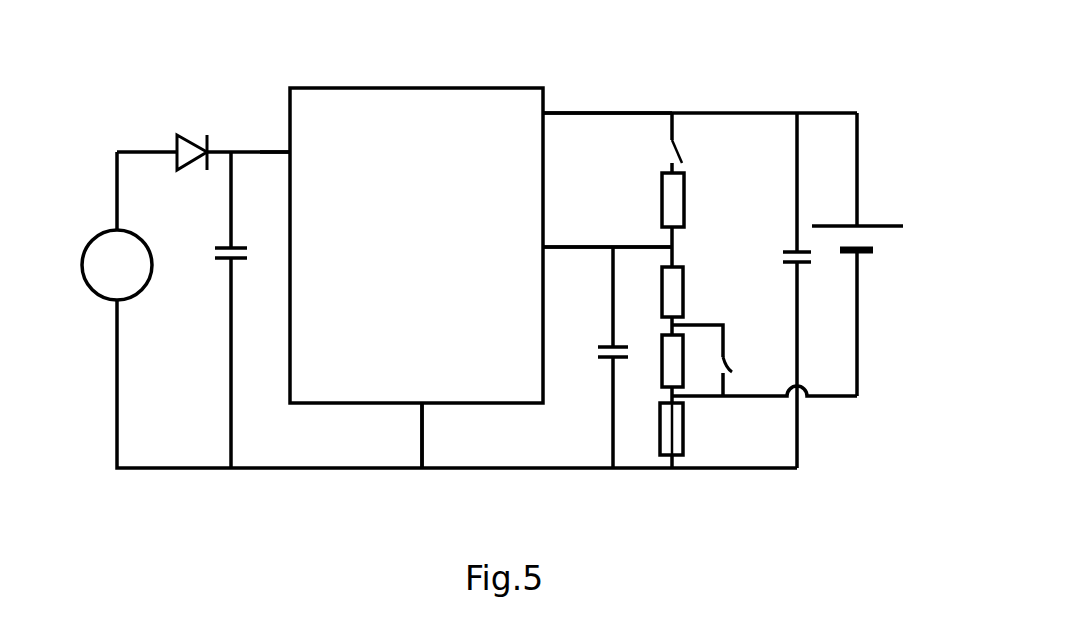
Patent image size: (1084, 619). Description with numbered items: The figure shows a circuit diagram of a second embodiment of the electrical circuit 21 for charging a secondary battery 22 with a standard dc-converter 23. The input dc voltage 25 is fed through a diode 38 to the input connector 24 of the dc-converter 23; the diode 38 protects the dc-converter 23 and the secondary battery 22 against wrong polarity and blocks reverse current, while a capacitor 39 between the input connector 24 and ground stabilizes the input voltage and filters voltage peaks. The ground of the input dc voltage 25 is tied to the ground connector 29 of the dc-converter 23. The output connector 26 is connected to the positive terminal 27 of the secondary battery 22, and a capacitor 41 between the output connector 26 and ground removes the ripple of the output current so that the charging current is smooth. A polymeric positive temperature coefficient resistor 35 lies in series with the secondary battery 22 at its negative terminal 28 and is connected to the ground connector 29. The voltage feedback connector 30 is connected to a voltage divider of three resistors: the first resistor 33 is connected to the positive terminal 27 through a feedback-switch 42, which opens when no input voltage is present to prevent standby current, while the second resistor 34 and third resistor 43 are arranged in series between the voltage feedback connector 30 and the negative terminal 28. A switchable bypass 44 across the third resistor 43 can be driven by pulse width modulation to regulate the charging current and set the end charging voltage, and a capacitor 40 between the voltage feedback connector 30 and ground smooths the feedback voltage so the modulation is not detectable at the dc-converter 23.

The electrical circuit 21 is at (707, 75).
The secondary battery 22 is at (886, 254).
The dc-converter 23 is at (478, 100).
The input connector 24 is at (290, 150).
The input dc voltage 25 is at (95, 237).
The output connector 26 is at (547, 112).
The positive terminal 27 is at (857, 223).
The negative terminal 28 is at (857, 252).
The ground connector 29 is at (420, 403).
The voltage feedback connector 30 is at (548, 240).
The first resistor 33 is at (683, 180).
The second resistor 34 is at (683, 300).
The polymeric positive temperature coefficient resistor 35 is at (683, 442).
The diode 38 is at (183, 136).
The capacitor 39 is at (228, 262).
The capacitor 40 is at (612, 360).
The capacitor 41 is at (797, 257).
The feedback-switch 42 is at (673, 142).
The third resistor 43 is at (662, 380).
The switchable bypass 44 is at (730, 372).